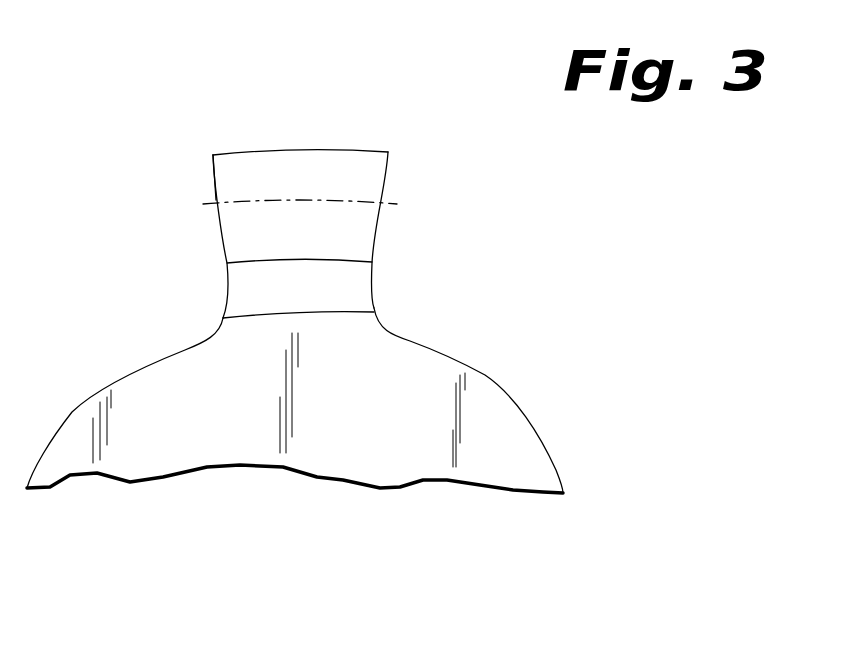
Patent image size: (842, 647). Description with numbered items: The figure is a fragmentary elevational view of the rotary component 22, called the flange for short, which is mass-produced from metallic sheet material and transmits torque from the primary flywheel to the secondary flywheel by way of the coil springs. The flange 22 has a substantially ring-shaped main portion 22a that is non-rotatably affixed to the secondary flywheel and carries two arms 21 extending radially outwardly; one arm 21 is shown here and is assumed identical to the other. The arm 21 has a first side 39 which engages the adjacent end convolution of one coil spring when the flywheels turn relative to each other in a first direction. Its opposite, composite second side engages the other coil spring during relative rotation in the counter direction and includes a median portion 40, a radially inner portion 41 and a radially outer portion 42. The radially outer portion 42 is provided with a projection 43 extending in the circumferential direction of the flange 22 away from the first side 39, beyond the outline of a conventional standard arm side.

The arm 21 is at (265, 170).
The rotary component (flange) 22 is at (285, 515).
The main portion 22a is at (432, 457).
The first side 39 is at (213, 173).
The median portion 40 is at (373, 263).
The radially inner portion 41 is at (373, 295).
The radially outer portion 42 is at (387, 173).
The projection 43 is at (388, 153).